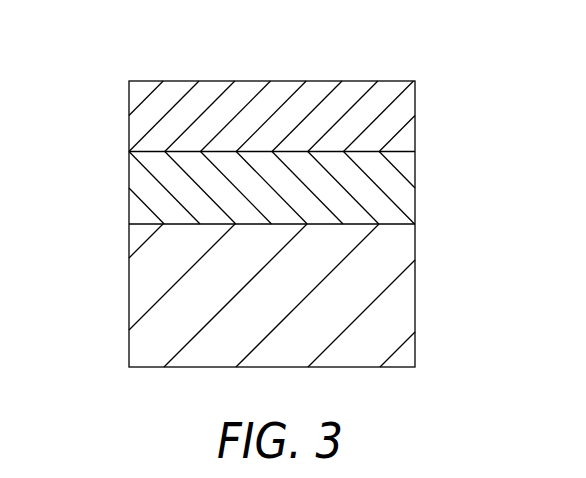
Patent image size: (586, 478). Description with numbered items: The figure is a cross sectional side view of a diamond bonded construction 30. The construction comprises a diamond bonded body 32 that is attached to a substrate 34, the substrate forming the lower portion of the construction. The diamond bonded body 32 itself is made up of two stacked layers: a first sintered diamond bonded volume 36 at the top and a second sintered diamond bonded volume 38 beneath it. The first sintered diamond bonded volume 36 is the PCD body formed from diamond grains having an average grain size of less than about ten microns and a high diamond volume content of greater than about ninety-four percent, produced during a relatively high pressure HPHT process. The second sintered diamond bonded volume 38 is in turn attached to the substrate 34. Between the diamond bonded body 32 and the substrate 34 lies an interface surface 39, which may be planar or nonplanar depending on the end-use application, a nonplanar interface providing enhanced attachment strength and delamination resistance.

The diamond bonded construction 30 is at (284, 185).
The diamond bonded body 32 is at (268, 152).
The substrate 34 is at (390, 315).
The first sintered diamond bonded volume 36 is at (140, 130).
The second sintered diamond bonded volume 38 is at (150, 202).
The interface surface 39 is at (393, 224).